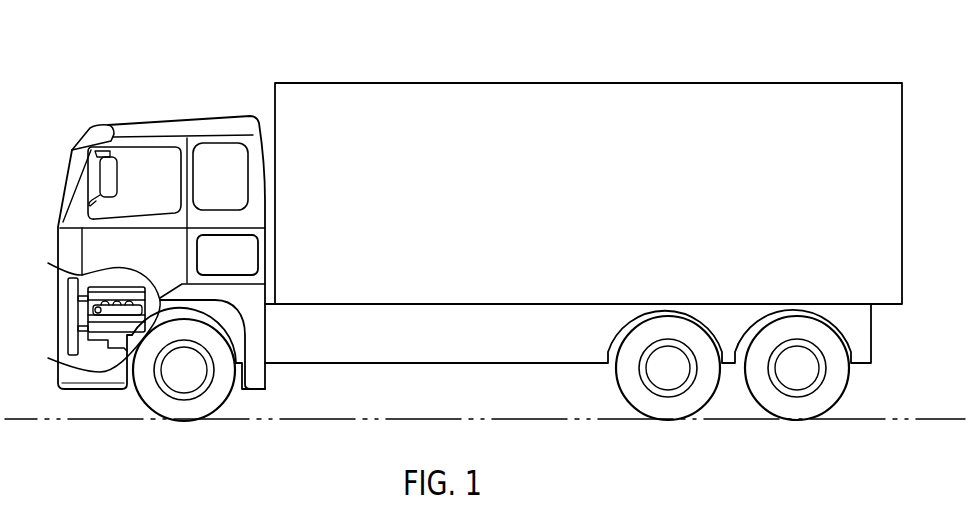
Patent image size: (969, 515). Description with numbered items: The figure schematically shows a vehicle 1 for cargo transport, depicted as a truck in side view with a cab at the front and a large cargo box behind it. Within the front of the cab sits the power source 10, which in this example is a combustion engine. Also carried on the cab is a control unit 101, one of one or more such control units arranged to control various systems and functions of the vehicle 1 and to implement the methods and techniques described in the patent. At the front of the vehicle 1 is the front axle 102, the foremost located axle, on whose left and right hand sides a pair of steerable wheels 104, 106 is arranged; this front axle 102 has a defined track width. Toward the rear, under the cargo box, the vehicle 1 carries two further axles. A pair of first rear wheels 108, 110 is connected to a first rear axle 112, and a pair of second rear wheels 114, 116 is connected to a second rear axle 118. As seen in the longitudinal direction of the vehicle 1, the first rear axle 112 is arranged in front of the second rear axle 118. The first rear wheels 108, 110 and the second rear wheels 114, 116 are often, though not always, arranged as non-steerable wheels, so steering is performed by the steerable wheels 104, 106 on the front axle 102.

The vehicle 1 is at (140, 62).
The power source 10 is at (107, 327).
The control unit 101 is at (227, 255).
The front axle 102 is at (184, 371).
The steerable wheel 104 is at (164, 402).
The steerable wheel 106 is at (155, 389).
The first rear wheel 108 is at (646, 402).
The first rear wheel 110 is at (636, 387).
The first rear axle 112 is at (668, 370).
The second rear wheel 114 is at (776, 402).
The second rear wheel 116 is at (769, 387).
The second rear axle 118 is at (798, 370).